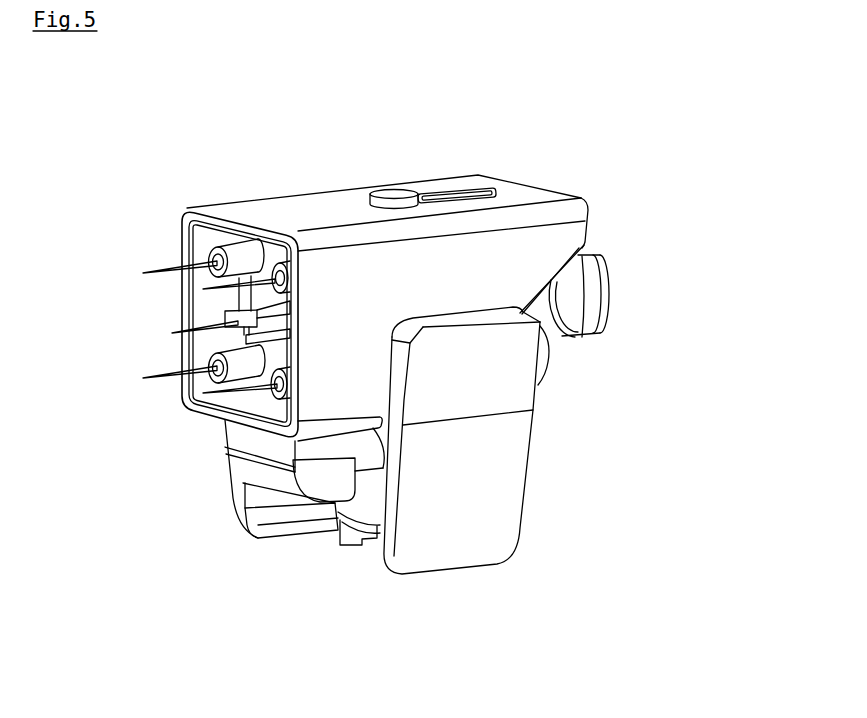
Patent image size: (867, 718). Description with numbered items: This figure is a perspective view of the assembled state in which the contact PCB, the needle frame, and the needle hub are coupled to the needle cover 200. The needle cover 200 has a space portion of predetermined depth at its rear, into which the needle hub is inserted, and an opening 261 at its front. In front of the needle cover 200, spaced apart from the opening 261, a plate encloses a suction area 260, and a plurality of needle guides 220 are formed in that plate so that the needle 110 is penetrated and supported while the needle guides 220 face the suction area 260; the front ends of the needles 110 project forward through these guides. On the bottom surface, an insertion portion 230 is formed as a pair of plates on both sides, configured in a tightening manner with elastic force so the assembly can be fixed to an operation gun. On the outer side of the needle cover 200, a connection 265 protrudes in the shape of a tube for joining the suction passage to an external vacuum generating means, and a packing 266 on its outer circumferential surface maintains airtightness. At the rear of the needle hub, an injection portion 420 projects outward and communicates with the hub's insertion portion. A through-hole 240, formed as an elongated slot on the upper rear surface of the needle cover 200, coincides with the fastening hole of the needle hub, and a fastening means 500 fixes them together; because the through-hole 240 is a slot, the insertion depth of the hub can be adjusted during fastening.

The needle 110 is at (169, 264).
The needle cover 200 is at (334, 176).
The needle guide 220 is at (247, 250).
The insertion portion 230 is at (495, 490).
The through-hole 240 is at (458, 190).
The suction area 260 is at (198, 360).
The opening 261 is at (197, 303).
The connection 265 is at (351, 555).
The packing 266 is at (340, 519).
The injection portion 420 is at (571, 294).
The fastening means 500 is at (389, 190).